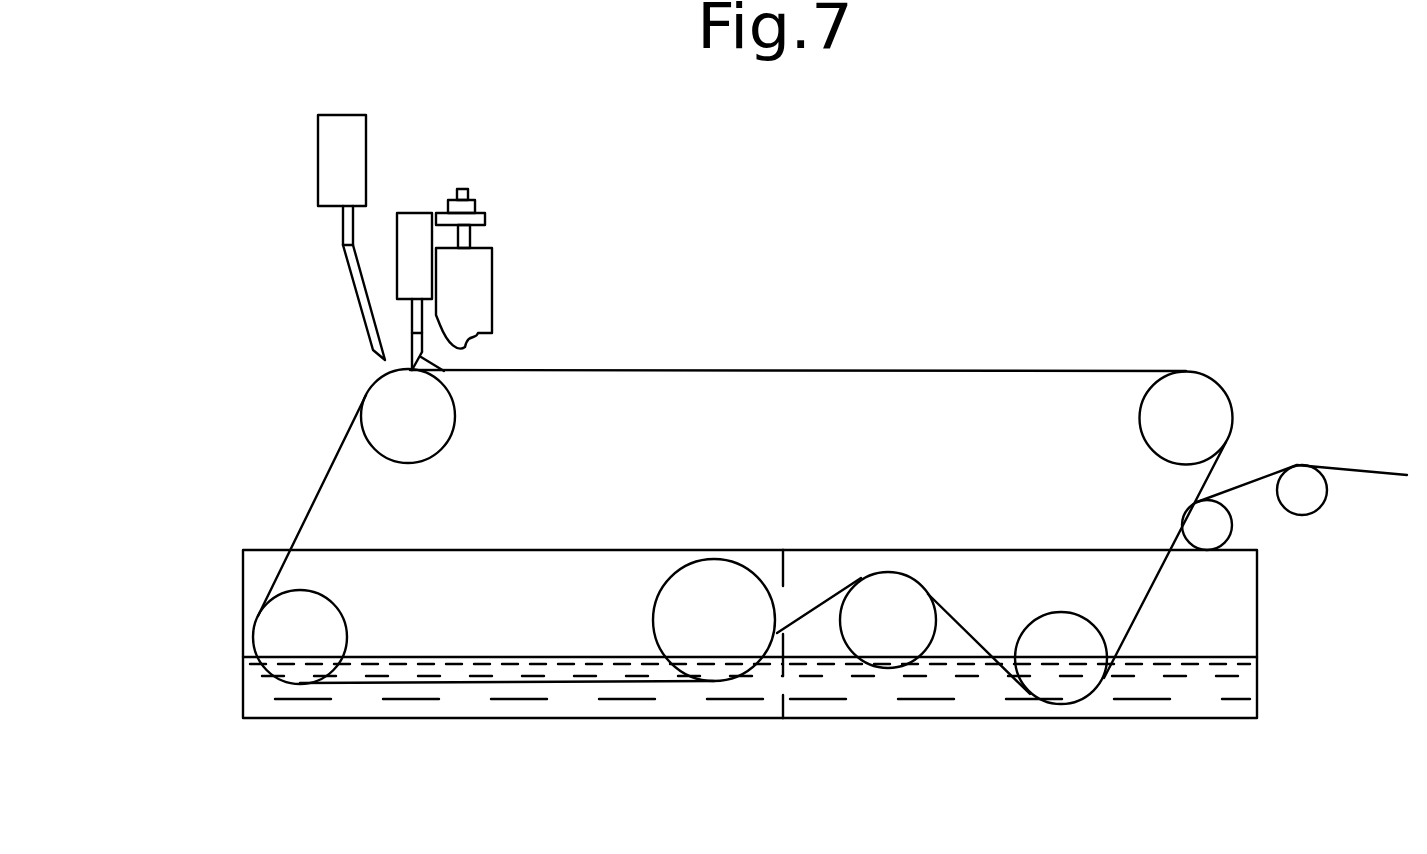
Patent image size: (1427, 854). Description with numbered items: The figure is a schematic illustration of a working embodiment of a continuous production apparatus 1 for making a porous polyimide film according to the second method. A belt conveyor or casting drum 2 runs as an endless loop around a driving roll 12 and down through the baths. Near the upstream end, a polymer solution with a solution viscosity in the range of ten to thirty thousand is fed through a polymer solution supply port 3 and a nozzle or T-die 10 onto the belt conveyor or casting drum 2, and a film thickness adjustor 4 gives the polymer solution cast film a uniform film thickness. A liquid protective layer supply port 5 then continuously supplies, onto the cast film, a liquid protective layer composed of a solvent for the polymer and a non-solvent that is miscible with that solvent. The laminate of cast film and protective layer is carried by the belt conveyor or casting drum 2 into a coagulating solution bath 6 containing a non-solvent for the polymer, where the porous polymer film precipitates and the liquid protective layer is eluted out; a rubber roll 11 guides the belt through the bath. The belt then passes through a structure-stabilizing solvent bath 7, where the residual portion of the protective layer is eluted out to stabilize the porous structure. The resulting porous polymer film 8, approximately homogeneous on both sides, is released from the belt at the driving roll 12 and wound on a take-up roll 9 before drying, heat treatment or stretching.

The continuous production apparatus 1 is at (817, 368).
The belt conveyor or casting drum 2 is at (330, 478).
The polymer solution supply port 3 is at (463, 189).
The film thickness adjustor 4 is at (420, 371).
The liquid protective layer supply port 5 is at (333, 178).
The coagulating solution bath 6 is at (559, 718).
The structure-stabilizing solvent bath 7 is at (1000, 720).
The porous polymer film 8 is at (1371, 468).
The take-up roll 9 is at (1279, 505).
The nozzle or T-die 10 is at (480, 340).
The rubber roll 11 is at (897, 612).
The driving roll 12 is at (1140, 418).